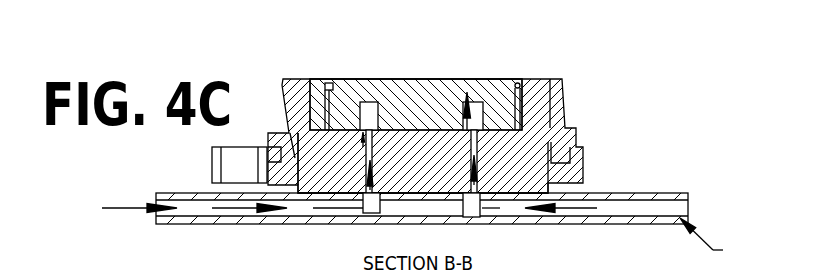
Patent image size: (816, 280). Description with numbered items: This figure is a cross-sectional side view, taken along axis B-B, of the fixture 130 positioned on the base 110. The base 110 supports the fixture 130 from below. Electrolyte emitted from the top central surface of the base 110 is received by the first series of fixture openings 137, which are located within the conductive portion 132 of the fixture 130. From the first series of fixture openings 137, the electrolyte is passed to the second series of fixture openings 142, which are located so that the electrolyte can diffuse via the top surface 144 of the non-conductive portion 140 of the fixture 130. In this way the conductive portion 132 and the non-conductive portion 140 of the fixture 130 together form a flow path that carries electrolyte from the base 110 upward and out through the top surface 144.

The base 110 is at (680, 170).
The fixture 130 is at (601, 139).
The conductive portion 132 is at (346, 170).
The first series of fixture openings 137 is at (447, 151).
The non-conductive portion 140 is at (456, 110).
The second series of fixture openings 142 is at (352, 93).
The top surface 144 is at (453, 58).